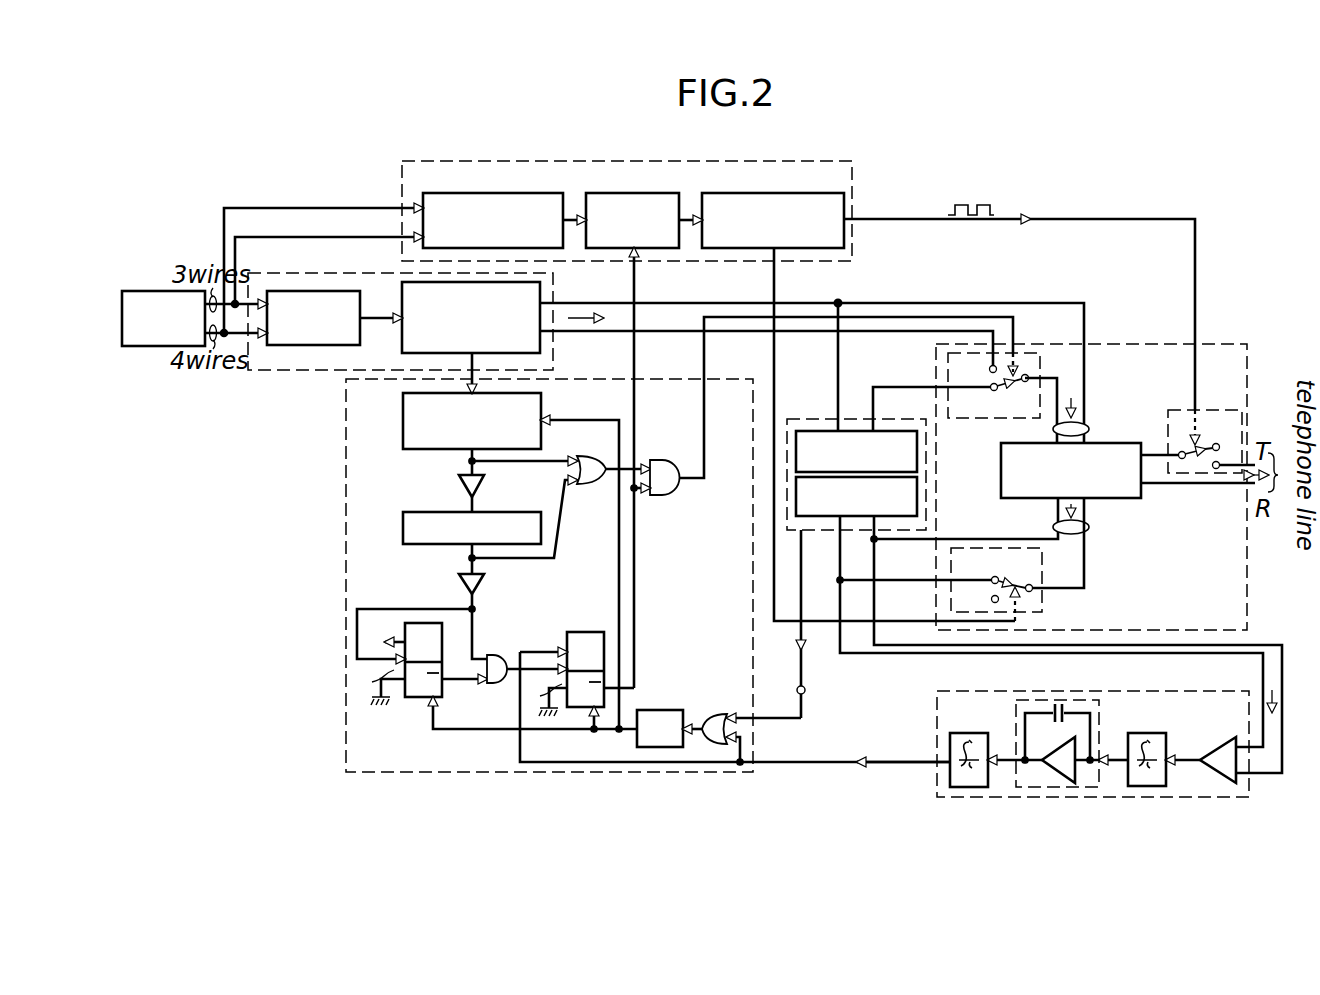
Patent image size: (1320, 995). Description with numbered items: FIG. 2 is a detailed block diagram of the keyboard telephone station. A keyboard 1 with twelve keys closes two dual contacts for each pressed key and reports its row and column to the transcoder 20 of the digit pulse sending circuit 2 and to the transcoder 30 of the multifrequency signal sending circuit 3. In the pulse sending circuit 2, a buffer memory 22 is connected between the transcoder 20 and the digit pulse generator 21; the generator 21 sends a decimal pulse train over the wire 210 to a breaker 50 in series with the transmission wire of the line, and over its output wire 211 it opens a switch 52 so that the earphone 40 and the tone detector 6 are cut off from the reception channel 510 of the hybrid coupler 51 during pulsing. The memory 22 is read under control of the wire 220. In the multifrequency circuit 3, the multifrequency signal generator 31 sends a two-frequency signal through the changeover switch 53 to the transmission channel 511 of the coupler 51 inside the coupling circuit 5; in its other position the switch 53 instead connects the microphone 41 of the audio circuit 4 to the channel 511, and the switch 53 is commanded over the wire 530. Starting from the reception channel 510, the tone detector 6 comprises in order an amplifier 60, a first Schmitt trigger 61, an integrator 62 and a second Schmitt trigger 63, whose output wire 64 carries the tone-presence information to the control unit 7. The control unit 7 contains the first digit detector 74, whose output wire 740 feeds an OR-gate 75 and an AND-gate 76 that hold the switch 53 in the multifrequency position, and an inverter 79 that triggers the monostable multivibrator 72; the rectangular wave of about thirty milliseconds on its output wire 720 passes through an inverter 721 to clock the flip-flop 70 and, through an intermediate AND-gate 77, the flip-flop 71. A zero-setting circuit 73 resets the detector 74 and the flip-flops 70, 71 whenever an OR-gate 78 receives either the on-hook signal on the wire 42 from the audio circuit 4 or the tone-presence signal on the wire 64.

The keyboard 1 is at (138, 291).
The digit pulse sending circuit 2 is at (418, 150).
The transcoder 20 is at (503, 182).
The buffer memory 22 is at (648, 182).
The digit pulse generator 21 is at (784, 182).
The wire 210 is at (844, 221).
The reading control wire 220 is at (638, 270).
The output wire 211 is at (778, 270).
The multifrequency signal sending circuit 3 is at (288, 372).
The transcoder 30 is at (356, 311).
The multifrequency signal generator 31 is at (402, 342).
The control unit 7 is at (346, 531).
The first digit detector 74 is at (403, 422).
The output wire 740 is at (462, 466).
The inverter 79 is at (484, 488).
The monostable multivibrator 72 is at (403, 537).
The output wire 720 is at (468, 562).
The inverter 721 is at (484, 587).
The OR-gate 75 is at (596, 460).
The AND-gate 76 is at (672, 467).
The intermediate AND-gate 77 is at (502, 660).
The flip-flop 70 is at (432, 701).
The flip-flop 71 is at (588, 632).
The zero-setting circuit 73 is at (662, 706).
The OR-gate 78 is at (724, 707).
The audio circuit 4 is at (810, 407).
The microphone 41 is at (895, 428).
The earphone 40 is at (828, 518).
The wire 42 is at (808, 692).
The coupling circuit 5 is at (1130, 346).
The changeover switch 53 is at (978, 420).
The wire 530 is at (1010, 352).
The hybrid coupler 51 is at (1001, 470).
The transmission channel 511 is at (1089, 424).
The reception channel 510 is at (1089, 527).
The breaker 50 is at (1214, 422).
The switch 52 is at (1042, 602).
The tone detector 6 is at (937, 794).
The amplifier 60 is at (1222, 746).
The first Schmitt trigger 61 is at (1150, 728).
The integrator 62 is at (1016, 734).
The second Schmitt trigger 63 is at (964, 728).
The output wire 64 is at (940, 762).